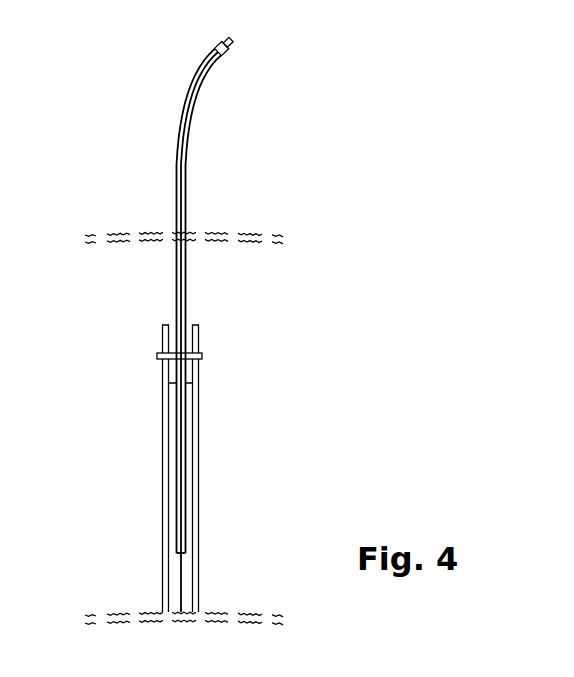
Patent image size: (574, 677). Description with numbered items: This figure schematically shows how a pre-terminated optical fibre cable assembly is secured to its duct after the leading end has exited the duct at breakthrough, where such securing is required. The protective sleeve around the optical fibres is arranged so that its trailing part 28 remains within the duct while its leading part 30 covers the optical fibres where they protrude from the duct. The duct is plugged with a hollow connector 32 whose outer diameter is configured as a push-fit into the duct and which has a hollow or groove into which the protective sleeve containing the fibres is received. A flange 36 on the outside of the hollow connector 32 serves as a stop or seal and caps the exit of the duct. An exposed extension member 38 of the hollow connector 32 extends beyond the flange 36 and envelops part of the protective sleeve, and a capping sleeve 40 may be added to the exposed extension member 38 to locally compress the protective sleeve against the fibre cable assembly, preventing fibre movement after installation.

The trailing part 28 is at (192, 455).
The leading part 30 is at (187, 173).
The hollow connector 32 is at (217, 350).
The flange 36 is at (203, 360).
The exposed extension member 38 is at (157, 357).
The capping sleeve 40 is at (195, 325).